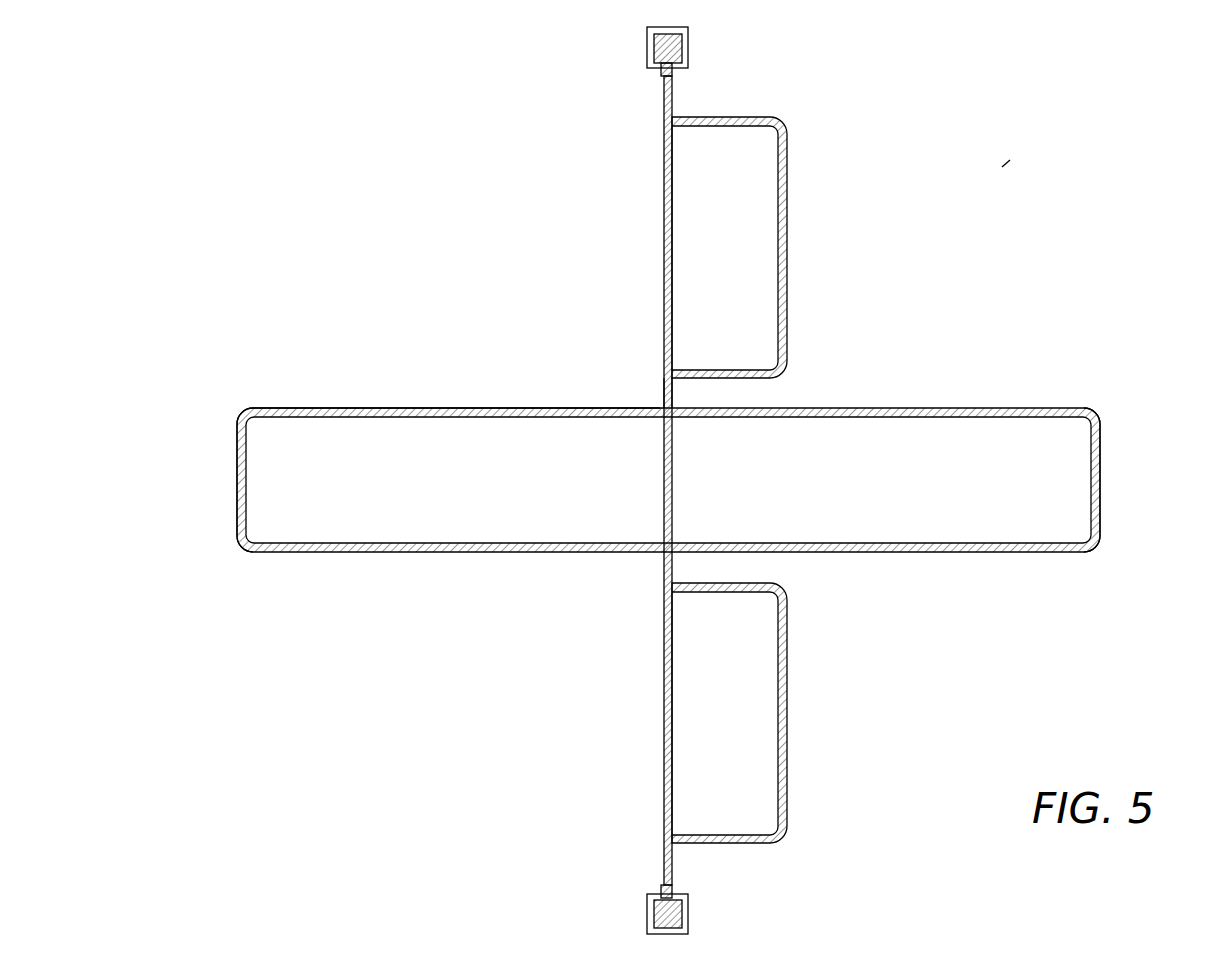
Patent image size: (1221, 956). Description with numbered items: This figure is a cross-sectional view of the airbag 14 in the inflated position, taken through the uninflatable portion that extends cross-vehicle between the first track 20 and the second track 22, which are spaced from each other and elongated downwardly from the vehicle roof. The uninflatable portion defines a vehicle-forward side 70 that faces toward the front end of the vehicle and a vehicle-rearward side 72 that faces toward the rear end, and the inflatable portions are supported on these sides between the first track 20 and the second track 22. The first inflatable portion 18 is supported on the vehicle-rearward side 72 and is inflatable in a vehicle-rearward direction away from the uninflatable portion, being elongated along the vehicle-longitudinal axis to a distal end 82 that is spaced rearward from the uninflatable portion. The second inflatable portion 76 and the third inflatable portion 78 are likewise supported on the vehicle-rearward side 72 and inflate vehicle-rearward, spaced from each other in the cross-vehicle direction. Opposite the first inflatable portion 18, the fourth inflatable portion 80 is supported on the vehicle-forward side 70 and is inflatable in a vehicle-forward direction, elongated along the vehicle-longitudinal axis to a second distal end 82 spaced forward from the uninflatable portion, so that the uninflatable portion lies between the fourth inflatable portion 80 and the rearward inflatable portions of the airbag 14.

The airbag 14 is at (1004, 165).
The first inflatable portion 18 is at (1045, 408).
The first track 20 is at (647, 915).
The second track 22 is at (647, 50).
The vehicle-forward side 70 is at (674, 400).
The vehicle-rearward side 72 is at (664, 388).
The second inflatable portion 76 is at (787, 678).
The third inflatable portion 78 is at (787, 218).
The fourth inflatable portion 80 is at (290, 408).
The distal end 82 is at (237, 448).